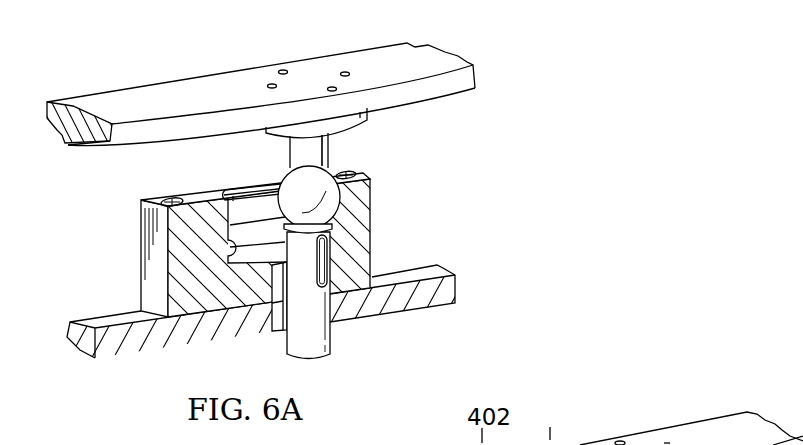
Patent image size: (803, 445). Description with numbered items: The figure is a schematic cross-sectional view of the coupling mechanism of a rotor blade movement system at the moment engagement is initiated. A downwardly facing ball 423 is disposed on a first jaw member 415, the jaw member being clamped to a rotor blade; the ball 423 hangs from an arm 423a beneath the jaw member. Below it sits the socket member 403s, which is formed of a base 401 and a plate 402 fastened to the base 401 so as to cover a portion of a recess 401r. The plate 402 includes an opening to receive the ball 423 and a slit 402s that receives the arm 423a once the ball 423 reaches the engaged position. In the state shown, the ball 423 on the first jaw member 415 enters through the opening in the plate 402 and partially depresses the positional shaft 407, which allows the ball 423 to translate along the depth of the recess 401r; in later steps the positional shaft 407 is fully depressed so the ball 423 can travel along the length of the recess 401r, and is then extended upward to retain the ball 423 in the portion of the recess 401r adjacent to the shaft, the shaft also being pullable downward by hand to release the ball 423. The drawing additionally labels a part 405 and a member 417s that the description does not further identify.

The first jaw member 415 is at (427, 90).
The arm 423a is at (330, 155).
The ball 423 is at (284, 183).
The socket member 403s is at (400, 183).
The plate 402 is at (195, 197).
The slit 402s is at (555, 421).
The base 401 is at (373, 248).
The recess 401r is at (240, 262).
The bracket 405 is at (278, 328).
The positional shaft 407 is at (332, 338).
The base plate 417s is at (420, 296).